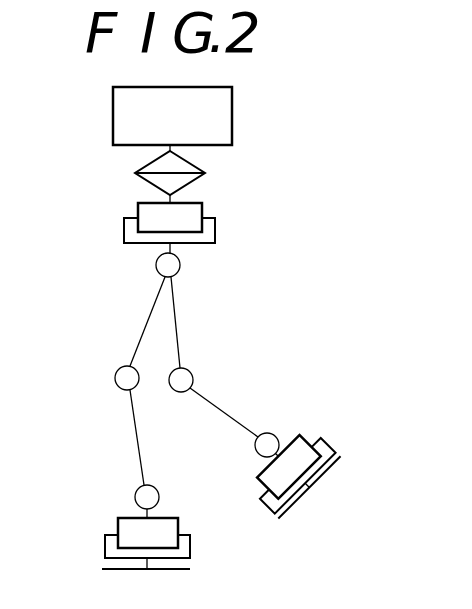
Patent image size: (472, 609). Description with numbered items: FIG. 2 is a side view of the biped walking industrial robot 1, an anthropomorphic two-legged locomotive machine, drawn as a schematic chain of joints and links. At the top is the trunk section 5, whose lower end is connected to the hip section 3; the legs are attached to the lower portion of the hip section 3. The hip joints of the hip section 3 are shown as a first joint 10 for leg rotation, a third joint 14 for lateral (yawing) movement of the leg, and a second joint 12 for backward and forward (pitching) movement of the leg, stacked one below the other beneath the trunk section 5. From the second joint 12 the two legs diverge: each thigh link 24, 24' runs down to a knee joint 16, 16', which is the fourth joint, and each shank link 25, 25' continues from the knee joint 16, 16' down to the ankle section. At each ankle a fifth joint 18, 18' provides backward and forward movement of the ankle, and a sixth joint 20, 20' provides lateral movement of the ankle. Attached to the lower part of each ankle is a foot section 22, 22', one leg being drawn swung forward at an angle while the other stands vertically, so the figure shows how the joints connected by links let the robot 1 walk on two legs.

The industrial robot 1 is at (117, 283).
The hip section 3 is at (118, 195).
The trunk section 5 is at (212, 128).
The first joint 10 is at (190, 163).
The third joint 14 is at (197, 210).
The second joint 12 is at (176, 263).
The thigh link 24 is at (202, 322).
The thigh link 24' is at (149, 324).
The knee joint 16 is at (204, 374).
The knee joint 16' is at (147, 396).
The shank link 25 is at (233, 406).
The shank link 25' is at (162, 437).
The fifth joint 18 is at (287, 426).
The fifth joint 18' is at (174, 491).
The sixth joint 20 is at (303, 459).
The sixth joint 20' is at (171, 533).
The foot section 22 is at (317, 485).
The foot section 22' is at (170, 577).